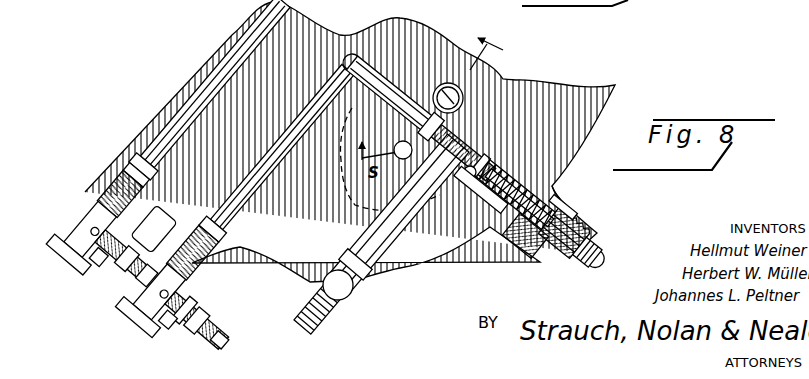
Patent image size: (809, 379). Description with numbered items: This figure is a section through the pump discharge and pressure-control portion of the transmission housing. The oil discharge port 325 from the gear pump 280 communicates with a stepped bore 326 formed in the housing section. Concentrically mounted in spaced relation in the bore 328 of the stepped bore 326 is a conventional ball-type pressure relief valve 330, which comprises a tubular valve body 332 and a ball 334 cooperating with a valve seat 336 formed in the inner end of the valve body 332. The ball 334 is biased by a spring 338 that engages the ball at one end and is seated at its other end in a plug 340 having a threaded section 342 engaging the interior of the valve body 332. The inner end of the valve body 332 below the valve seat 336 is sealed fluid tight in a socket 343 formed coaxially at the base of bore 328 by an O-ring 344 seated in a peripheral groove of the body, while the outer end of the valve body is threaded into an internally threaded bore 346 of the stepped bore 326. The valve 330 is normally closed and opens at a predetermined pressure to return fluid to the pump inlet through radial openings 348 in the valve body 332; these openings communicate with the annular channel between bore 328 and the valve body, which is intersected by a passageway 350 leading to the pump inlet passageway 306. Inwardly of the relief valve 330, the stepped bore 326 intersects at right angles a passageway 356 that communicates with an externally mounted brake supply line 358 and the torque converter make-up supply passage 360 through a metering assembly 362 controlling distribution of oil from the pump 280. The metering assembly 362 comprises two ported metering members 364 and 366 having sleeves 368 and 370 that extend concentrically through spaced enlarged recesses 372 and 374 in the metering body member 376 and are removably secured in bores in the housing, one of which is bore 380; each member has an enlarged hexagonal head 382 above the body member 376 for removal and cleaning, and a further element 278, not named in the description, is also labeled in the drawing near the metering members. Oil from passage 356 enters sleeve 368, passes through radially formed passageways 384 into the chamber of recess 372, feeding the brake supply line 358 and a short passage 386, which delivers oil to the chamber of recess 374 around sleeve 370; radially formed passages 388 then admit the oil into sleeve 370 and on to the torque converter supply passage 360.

The nut 278 is at (208, 262).
The gear pump 280 is at (512, 80).
The pump inlet passageway 306 is at (345, 302).
The oil discharge port 325 is at (466, 70).
The stepped bore 326 is at (438, 92).
The bore 328 is at (516, 246).
The ball-type pressure relief valve 330 is at (605, 231).
The tubular valve body 332 is at (551, 185).
The ball 334 is at (488, 172).
The valve seat 336 is at (470, 200).
The spring 338 is at (543, 258).
The plug 340 is at (600, 257).
The threaded section 342 is at (580, 281).
The socket 343 is at (398, 158).
The O-ring 344 is at (450, 119).
The internally threaded bore 346 is at (561, 205).
The radial openings 348 is at (500, 175).
The passageway 350 is at (372, 282).
The passageway 356 is at (262, 163).
The brake supply line 358 is at (226, 336).
The torque converter make-up supply passage 360 is at (197, 102).
The metering assembly 362 is at (116, 292).
The ported metering member 364 is at (166, 322).
The ported metering member 366 is at (90, 259).
The sleeve 368 is at (202, 278).
The sleeve 370 is at (118, 183).
The enlarged recess 372 is at (212, 300).
The enlarged recess 374 is at (104, 197).
The metering body member 376 is at (93, 208).
The bore 380 is at (124, 170).
The enlarged hexagonal head 382 is at (100, 272).
The radially formed passageways 384 is at (188, 312).
The short passage 386 is at (150, 280).
The radially formed passages 388 is at (86, 222).